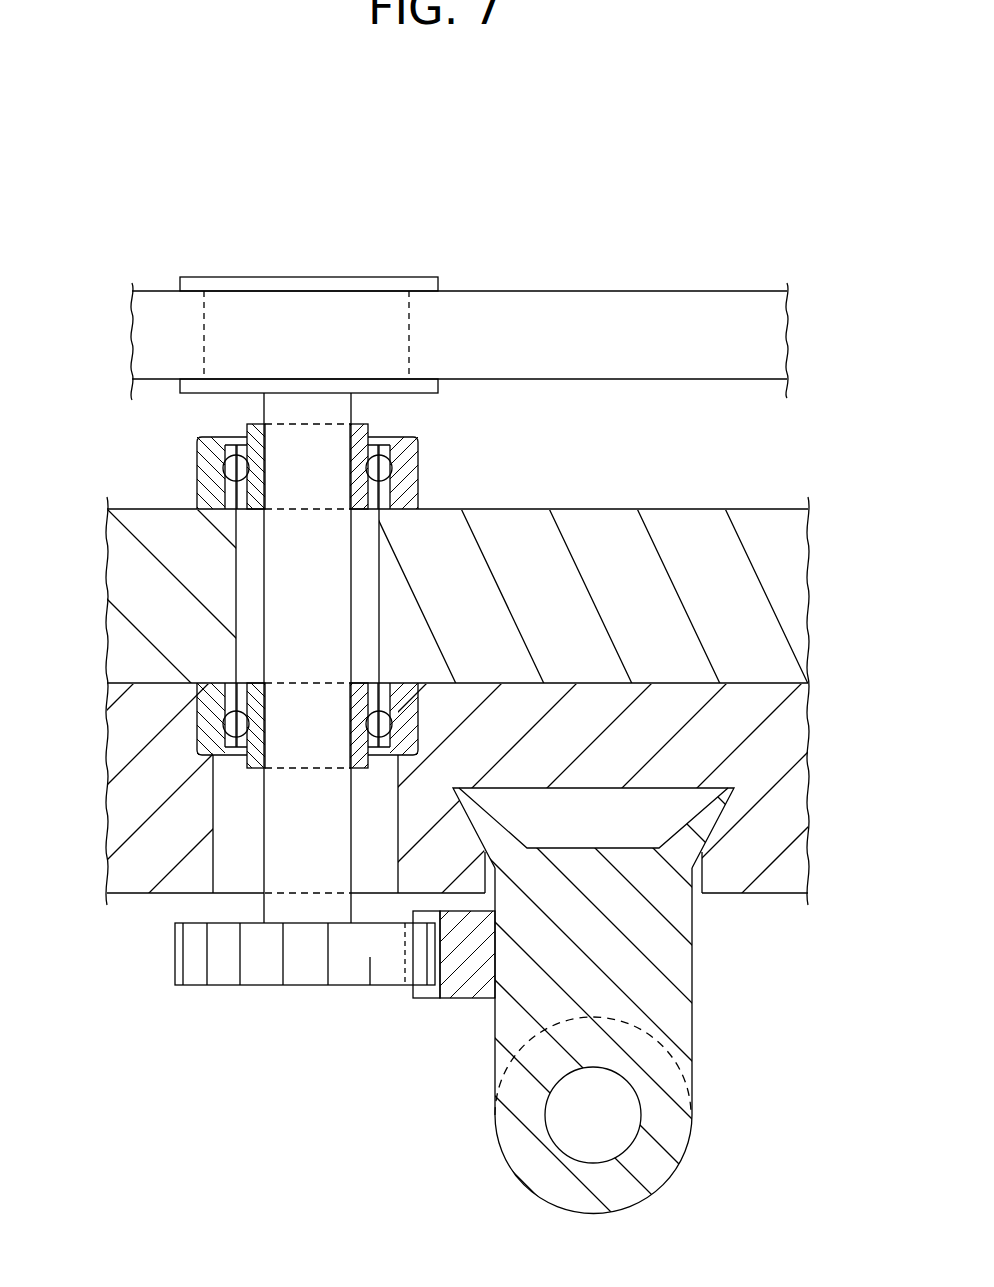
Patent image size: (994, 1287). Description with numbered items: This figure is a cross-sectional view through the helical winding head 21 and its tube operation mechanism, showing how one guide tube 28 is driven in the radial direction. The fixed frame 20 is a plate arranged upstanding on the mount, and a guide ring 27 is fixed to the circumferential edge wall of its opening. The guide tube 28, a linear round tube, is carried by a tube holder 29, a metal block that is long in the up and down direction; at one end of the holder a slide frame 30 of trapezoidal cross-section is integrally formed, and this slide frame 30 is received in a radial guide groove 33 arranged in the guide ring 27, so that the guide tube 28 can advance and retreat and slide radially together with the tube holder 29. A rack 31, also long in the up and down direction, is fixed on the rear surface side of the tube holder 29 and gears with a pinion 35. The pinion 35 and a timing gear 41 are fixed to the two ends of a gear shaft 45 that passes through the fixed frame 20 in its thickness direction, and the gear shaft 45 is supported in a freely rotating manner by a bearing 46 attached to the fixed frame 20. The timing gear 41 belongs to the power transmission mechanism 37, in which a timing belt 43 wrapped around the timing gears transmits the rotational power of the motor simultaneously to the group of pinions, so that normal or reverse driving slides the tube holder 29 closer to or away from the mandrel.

The fixed frame 20 is at (680, 514).
The helical winding head 21 is at (400, 1160).
The guide ring 27 is at (767, 893).
The guide tube 28 is at (658, 1177).
The tube holder 29 is at (685, 1020).
The slide frame 30 is at (705, 823).
The rack 31 is at (429, 1000).
The radial guide groove 33 is at (717, 807).
The pinion 35 is at (297, 988).
The power transmission mechanism 37 is at (488, 256).
The timing gear 41 is at (275, 276).
The timing belt 43 is at (631, 293).
The gear shaft 45 is at (343, 600).
The bearing 46 is at (384, 466).